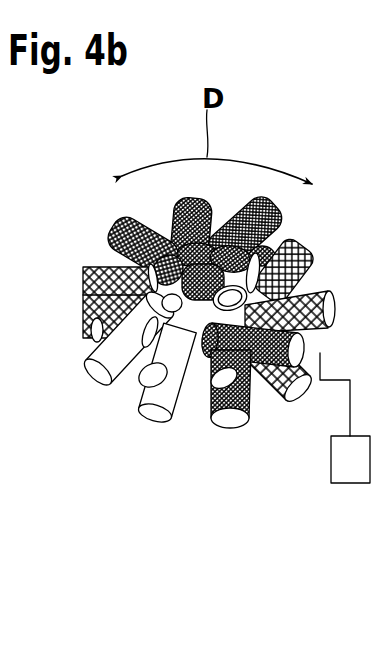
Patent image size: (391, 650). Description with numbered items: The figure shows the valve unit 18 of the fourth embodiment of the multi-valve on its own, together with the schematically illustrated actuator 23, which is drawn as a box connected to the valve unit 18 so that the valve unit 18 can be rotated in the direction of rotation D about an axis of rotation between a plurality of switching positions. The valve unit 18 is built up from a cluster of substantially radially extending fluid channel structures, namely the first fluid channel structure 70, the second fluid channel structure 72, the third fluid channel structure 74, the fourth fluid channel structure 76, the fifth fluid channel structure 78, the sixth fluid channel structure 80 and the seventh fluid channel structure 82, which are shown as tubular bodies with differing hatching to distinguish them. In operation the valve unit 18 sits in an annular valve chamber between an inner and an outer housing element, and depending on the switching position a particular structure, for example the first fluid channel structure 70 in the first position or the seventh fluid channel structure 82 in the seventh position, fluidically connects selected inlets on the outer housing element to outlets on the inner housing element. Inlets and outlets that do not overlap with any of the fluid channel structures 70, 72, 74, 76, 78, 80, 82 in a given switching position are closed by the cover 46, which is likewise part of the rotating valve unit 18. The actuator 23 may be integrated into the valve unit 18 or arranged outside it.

The valve unit 18 is at (187, 448).
The actuator 23 is at (350, 483).
The cover 46 is at (125, 400).
The first fluid channel structure 70 is at (100, 278).
The second fluid channel structure 72 is at (115, 222).
The third fluid channel structure 74 is at (188, 200).
The fourth fluid channel structure 76 is at (318, 245).
The fifth fluid channel structure 78 is at (330, 302).
The sixth fluid channel structure 80 is at (232, 418).
The seventh fluid channel structure 82 is at (150, 414).